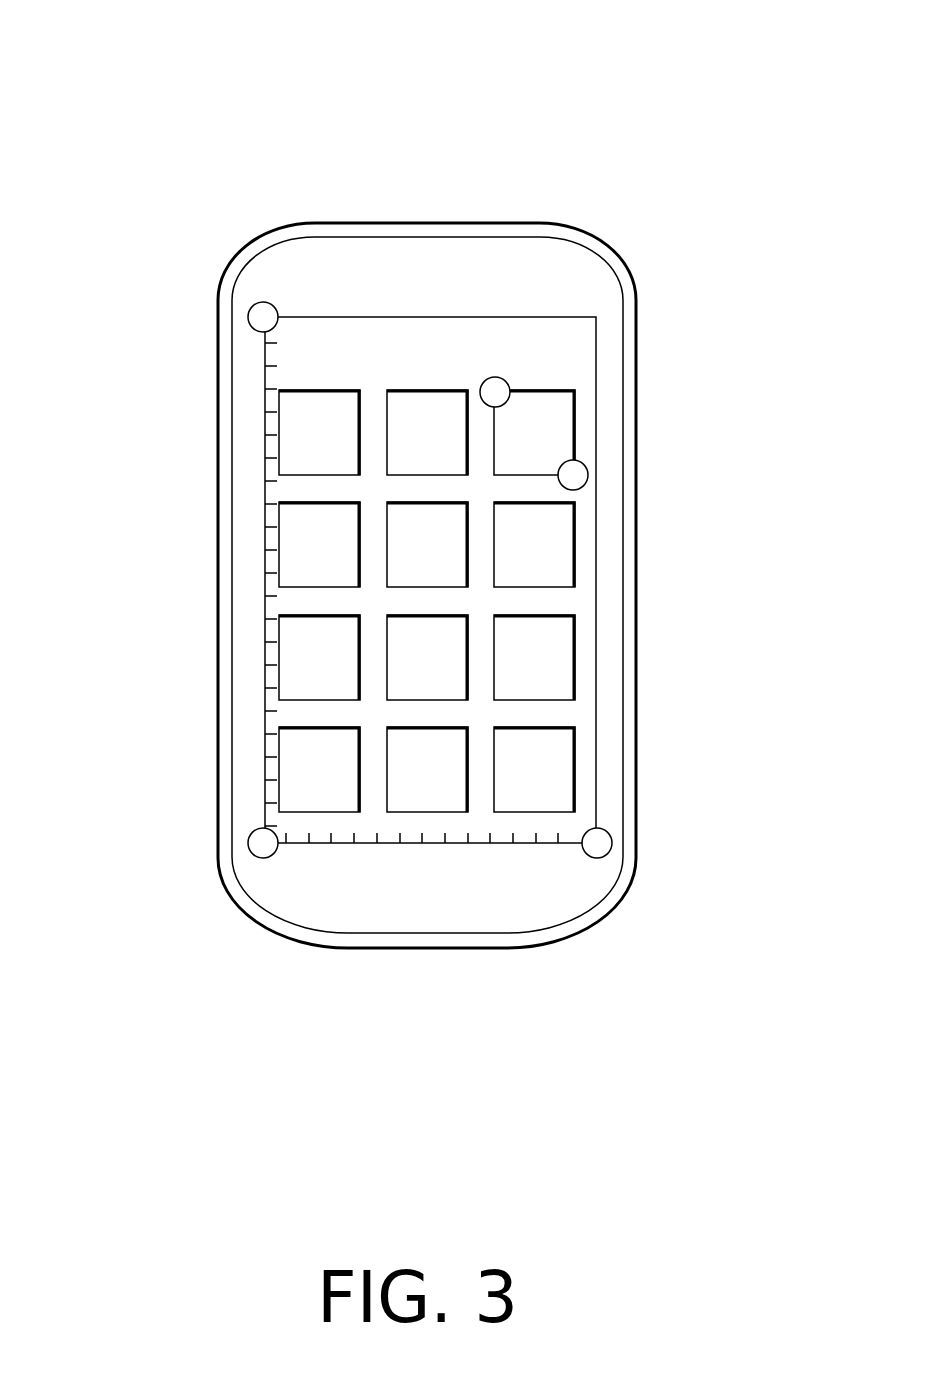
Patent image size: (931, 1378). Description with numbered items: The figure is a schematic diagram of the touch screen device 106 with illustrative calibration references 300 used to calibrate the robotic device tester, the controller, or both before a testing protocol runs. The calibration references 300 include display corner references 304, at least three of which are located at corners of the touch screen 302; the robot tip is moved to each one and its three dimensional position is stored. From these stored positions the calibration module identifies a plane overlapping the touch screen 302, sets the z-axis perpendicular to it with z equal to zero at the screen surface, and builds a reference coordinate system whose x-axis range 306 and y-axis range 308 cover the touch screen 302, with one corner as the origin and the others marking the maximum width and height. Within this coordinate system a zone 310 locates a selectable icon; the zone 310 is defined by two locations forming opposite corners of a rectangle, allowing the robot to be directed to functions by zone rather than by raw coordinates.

The calibration references 300 is at (130, 73).
The touch screen device 106 is at (558, 223).
The touch screen 302 is at (325, 330).
The display corner references 304 is at (200, 398).
The x-axis range 306 is at (432, 857).
The y-axis range 308 is at (252, 688).
The zone 310 is at (577, 417).